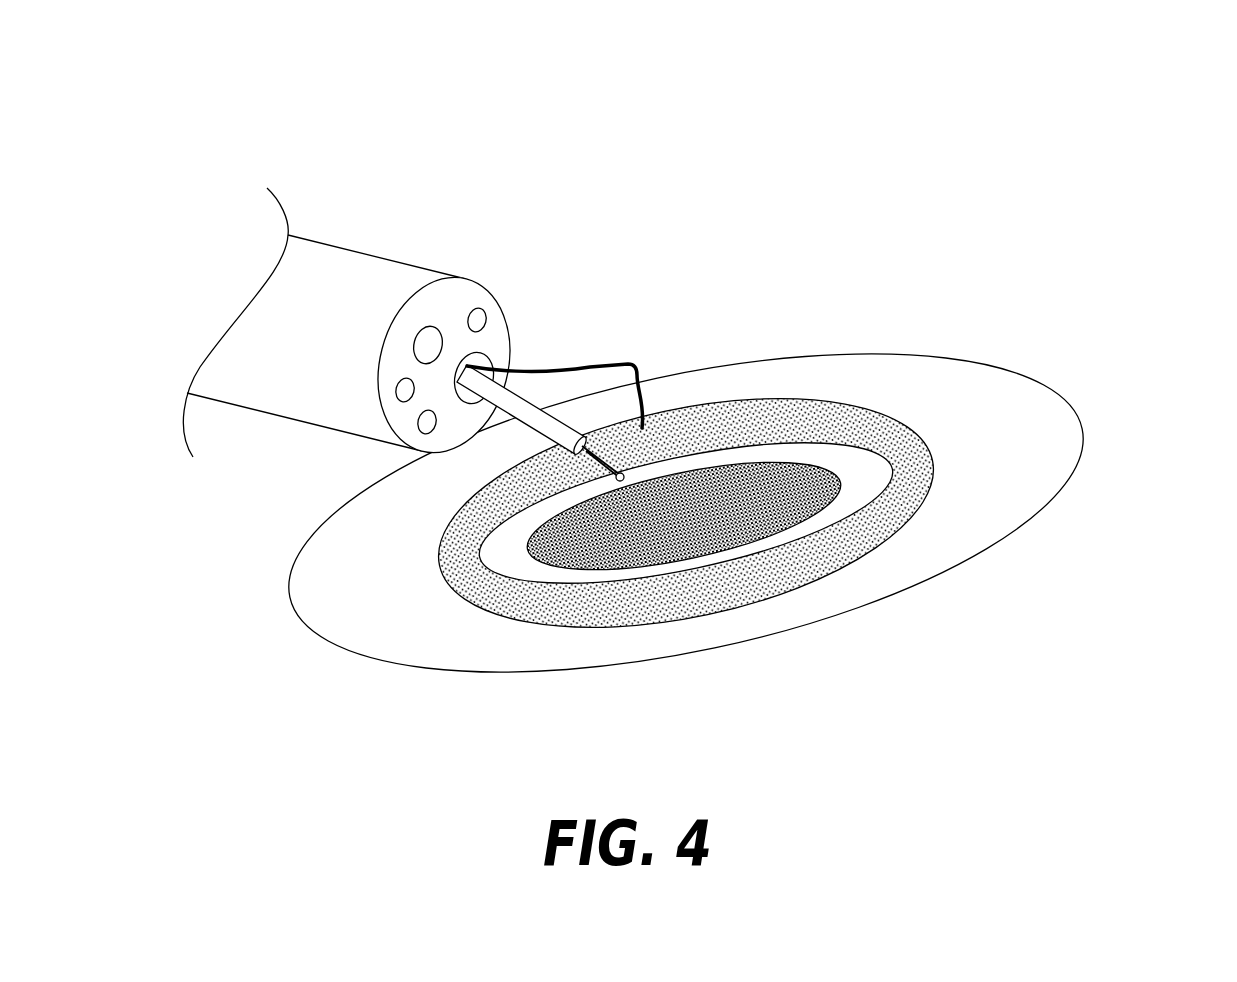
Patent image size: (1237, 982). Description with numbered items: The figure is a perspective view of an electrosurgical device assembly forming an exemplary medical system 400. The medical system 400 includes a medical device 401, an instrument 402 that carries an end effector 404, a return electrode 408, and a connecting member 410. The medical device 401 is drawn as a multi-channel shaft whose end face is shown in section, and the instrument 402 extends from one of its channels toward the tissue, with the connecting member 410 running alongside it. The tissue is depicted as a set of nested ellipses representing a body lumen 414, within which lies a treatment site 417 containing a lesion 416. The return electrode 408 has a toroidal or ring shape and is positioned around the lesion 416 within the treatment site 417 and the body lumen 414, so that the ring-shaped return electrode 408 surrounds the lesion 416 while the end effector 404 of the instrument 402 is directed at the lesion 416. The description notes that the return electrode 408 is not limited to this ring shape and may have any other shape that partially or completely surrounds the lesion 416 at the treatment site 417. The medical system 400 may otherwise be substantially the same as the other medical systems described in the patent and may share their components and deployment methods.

The medical system 400 is at (1101, 123).
The medical device 401 is at (348, 283).
The instrument 402 is at (515, 406).
The end effector 404 is at (597, 474).
The return electrode 408 is at (838, 412).
The connecting member 410 is at (577, 368).
The body lumen 414 is at (1064, 341).
The lesion 416 is at (833, 500).
The treatment site 417 is at (787, 287).